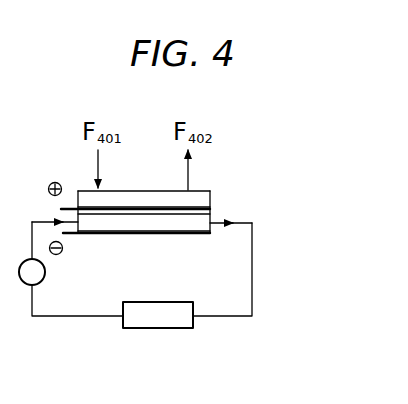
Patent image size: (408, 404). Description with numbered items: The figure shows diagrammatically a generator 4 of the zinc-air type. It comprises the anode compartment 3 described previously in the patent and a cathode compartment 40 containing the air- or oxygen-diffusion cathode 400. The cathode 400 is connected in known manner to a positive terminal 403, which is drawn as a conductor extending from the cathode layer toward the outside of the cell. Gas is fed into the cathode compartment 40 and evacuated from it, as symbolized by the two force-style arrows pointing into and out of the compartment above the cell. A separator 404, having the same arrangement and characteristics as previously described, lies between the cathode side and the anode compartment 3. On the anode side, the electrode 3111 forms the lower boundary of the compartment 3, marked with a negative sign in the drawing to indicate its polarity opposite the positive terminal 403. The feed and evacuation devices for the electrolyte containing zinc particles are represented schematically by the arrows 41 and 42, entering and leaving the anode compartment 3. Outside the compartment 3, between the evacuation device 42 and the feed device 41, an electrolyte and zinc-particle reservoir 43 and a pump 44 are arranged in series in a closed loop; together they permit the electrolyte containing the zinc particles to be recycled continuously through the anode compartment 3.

The generator 4 is at (264, 196).
The cathode compartment 40 is at (144, 200).
The air- or oxygen-diffusion cathode 400 is at (195, 206).
The positive terminal 403 is at (73, 208).
The separator 404 is at (167, 214).
The anode compartment 3 is at (144, 223).
The lower electrode 3111 is at (70, 234).
The feed device 41 is at (48, 209).
The evacuation device 42 is at (232, 209).
The electrolyte and zinc-particle reservoir 43 is at (158, 315).
The pump 44 is at (32, 272).